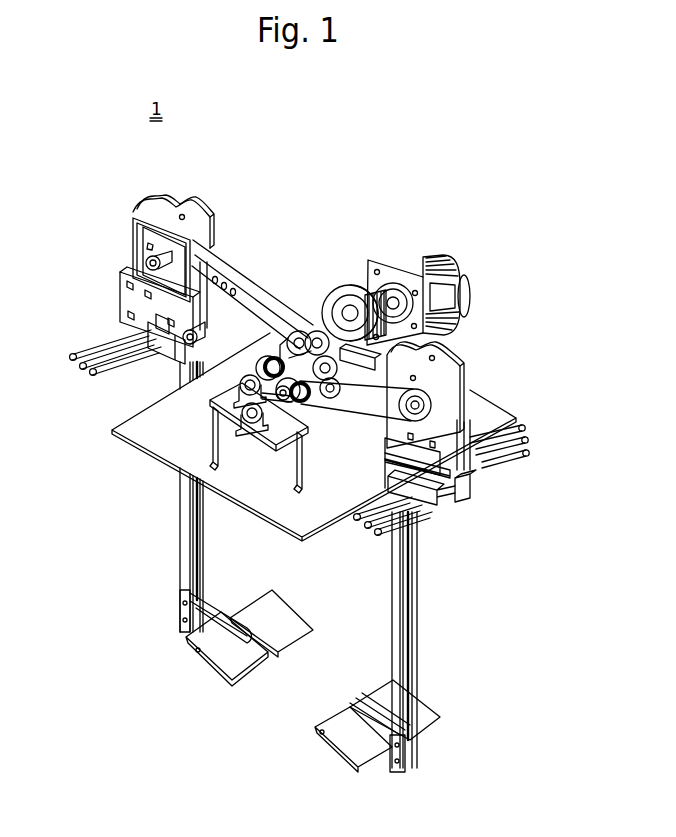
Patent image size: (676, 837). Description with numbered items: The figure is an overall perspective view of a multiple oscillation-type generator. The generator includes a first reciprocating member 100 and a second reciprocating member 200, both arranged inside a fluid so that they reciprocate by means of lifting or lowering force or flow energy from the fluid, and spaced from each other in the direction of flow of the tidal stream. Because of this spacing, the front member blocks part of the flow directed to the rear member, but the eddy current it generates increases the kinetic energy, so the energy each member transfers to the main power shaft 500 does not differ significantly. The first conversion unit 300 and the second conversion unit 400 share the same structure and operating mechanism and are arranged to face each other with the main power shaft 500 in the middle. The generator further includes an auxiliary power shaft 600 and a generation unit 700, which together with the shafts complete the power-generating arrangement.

The first reciprocating member 100 is at (232, 662).
The second reciprocating member 200 is at (344, 752).
The first conversion unit 300 is at (125, 226).
The second conversion unit 400 is at (465, 372).
The main power shaft 500 is at (265, 345).
The auxiliary power shaft 600 is at (276, 440).
The generation unit 700 is at (400, 262).